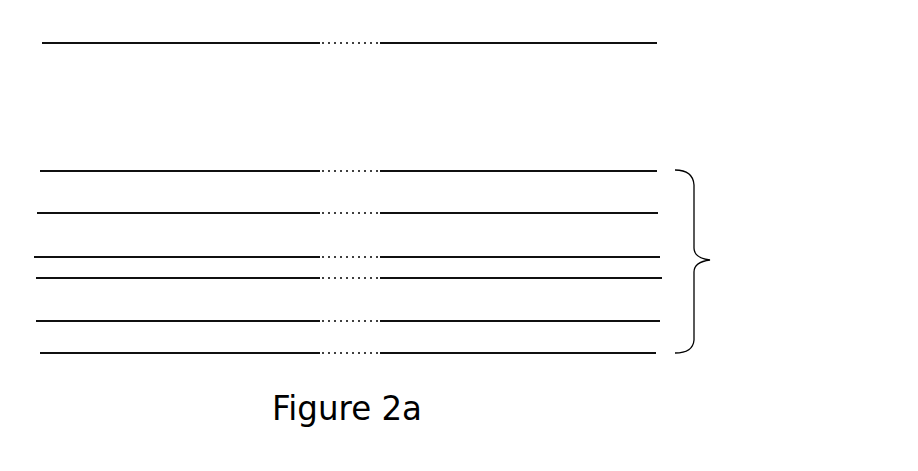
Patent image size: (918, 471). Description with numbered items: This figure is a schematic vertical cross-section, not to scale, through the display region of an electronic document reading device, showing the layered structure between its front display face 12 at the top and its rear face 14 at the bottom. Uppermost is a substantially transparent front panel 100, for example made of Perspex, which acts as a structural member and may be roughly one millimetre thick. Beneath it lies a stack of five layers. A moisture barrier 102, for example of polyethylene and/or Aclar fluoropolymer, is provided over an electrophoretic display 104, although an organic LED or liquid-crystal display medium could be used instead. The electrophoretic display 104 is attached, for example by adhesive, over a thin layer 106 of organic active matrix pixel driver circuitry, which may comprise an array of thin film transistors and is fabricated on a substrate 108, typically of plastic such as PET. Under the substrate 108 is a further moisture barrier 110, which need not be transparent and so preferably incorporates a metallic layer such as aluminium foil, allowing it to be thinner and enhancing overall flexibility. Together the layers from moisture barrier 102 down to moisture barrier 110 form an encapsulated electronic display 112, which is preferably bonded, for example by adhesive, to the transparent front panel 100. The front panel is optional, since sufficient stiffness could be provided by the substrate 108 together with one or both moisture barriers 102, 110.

The front display face 12 is at (206, 43).
The rear face 14 is at (237, 354).
The front panel 100 is at (138, 115).
The moisture barrier 102 is at (147, 201).
The electrophoretic display 104 is at (139, 245).
The organic active matrix pixel driver circuitry layer 106 is at (125, 276).
The substrate 108 is at (127, 308).
The moisture barrier 110 is at (127, 346).
The encapsulated electronic display 112 is at (743, 273).